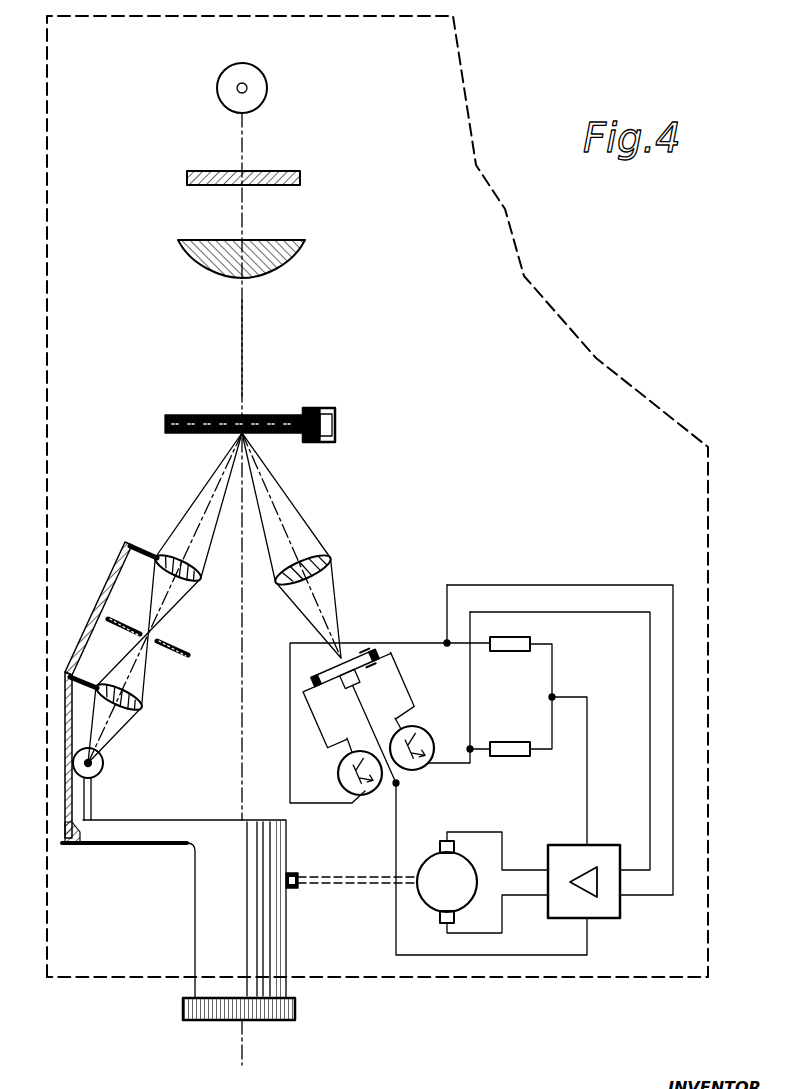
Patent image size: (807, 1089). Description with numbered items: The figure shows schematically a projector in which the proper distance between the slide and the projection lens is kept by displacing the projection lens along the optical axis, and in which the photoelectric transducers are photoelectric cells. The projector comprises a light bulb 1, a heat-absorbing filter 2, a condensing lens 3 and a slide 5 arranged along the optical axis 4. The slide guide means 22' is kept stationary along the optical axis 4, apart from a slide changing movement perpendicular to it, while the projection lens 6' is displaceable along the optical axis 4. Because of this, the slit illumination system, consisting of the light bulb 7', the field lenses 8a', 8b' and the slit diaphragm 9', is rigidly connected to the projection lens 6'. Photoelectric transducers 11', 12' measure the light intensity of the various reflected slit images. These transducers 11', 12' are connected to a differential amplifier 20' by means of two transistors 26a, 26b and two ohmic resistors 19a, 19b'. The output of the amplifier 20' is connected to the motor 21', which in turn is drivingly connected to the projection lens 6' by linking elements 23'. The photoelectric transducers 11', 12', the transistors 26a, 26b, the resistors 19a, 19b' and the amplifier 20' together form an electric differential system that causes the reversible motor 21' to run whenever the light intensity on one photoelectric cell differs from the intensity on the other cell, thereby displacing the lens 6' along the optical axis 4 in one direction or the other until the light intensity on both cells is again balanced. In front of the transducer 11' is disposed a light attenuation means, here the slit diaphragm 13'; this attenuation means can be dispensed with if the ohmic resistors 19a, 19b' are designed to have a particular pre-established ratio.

The light bulb 1 is at (260, 93).
The heat-absorbing filter 2 is at (300, 177).
The condensing lens 3 is at (292, 262).
The optical axis 4 is at (243, 348).
The slide 5 is at (300, 417).
The slide guide means 22' is at (348, 425).
The field lens 8b' is at (134, 585).
The slit diaphragm 9' is at (168, 637).
The field lens 8a' is at (143, 715).
The light bulb 7' is at (116, 784).
The projection lens 6' is at (178, 846).
The linking elements 23' is at (351, 903).
The slit diaphragm 13' is at (348, 641).
The photoelectric transducer 11' is at (396, 628).
The photoelectric transducer 12' is at (359, 702).
The transistor 26b is at (360, 797).
The transistor 26a is at (413, 771).
The ohmic resistor 19b' is at (512, 669).
The ohmic resistor 19a is at (508, 757).
The differential amplifier 20' is at (593, 853).
The motor 21' is at (473, 874).